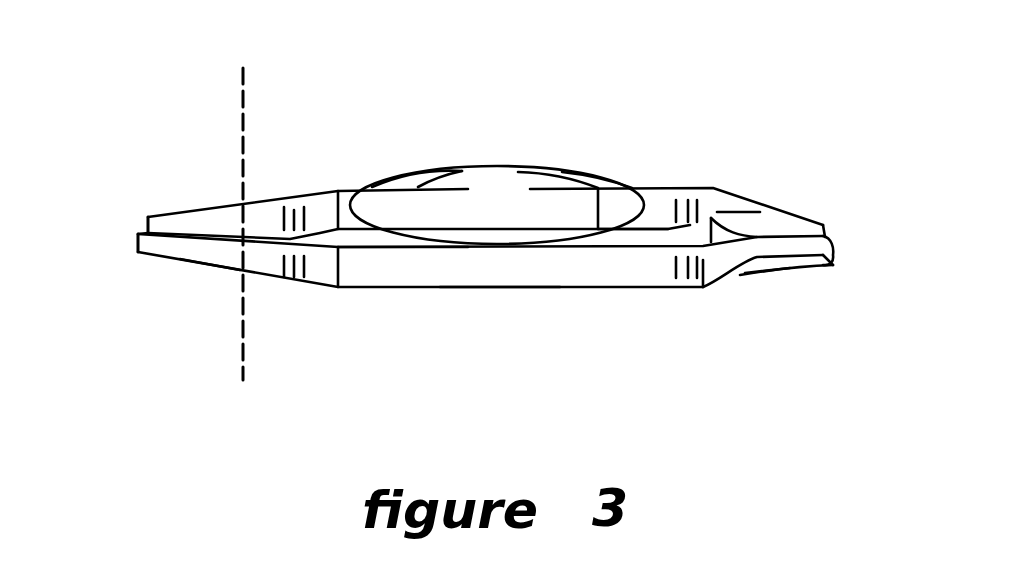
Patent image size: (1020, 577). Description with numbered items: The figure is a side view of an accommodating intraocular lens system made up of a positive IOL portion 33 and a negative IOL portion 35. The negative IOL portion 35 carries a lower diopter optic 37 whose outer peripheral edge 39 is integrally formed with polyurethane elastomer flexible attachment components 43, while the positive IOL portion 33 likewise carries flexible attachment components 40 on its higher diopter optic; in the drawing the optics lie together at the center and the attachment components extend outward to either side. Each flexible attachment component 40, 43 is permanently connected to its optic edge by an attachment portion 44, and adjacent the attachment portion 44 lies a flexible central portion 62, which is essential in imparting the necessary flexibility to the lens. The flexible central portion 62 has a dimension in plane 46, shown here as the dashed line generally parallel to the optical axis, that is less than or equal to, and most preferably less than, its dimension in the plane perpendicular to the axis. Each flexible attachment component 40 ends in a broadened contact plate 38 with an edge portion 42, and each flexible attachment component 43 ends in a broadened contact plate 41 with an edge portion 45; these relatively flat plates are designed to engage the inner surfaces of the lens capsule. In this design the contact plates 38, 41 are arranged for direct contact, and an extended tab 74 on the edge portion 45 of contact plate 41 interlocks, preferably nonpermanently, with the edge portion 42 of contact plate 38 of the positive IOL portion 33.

The positive IOL portion 33 is at (585, 168).
The negative IOL portion 35 is at (708, 272).
The lower diopter optic 37 is at (497, 289).
The contact plate 38 is at (148, 217).
The outer peripheral edge 39 is at (363, 290).
The flexible attachment component 40 is at (262, 200).
The contact plate 41 is at (137, 251).
The edge portion 42 is at (668, 212).
The flexible attachment component 43 is at (210, 267).
The attachment portion 44 is at (372, 180).
The edge portion 45 is at (735, 260).
The plane 46- 46 is at (241, 228).
The flexible central portion 62 is at (297, 212).
The extended tab 74 is at (138, 232).